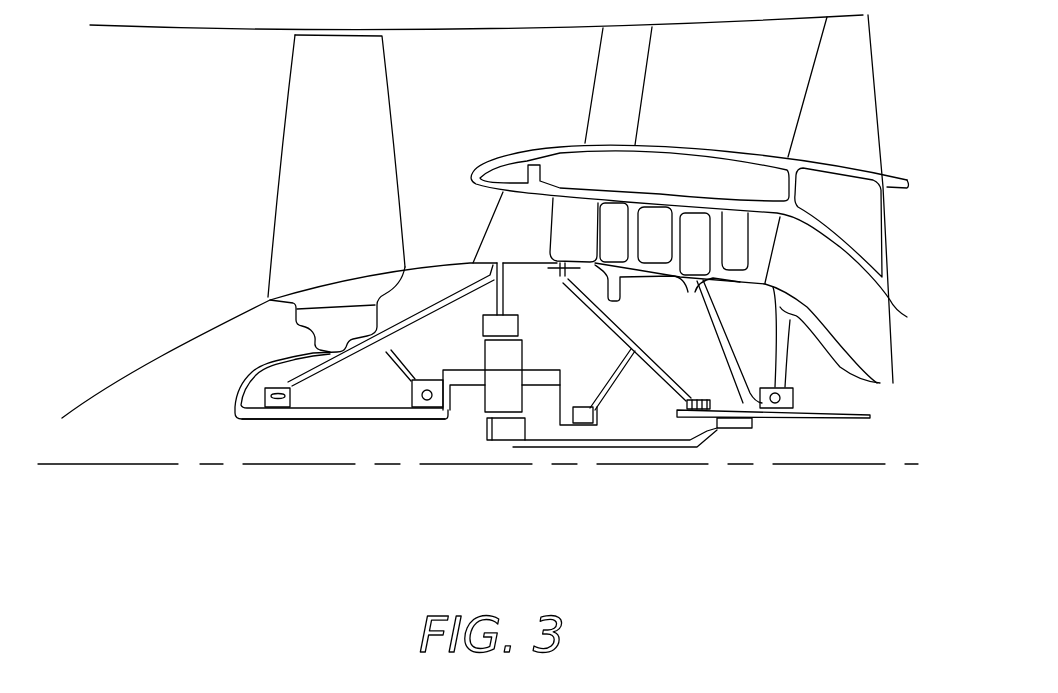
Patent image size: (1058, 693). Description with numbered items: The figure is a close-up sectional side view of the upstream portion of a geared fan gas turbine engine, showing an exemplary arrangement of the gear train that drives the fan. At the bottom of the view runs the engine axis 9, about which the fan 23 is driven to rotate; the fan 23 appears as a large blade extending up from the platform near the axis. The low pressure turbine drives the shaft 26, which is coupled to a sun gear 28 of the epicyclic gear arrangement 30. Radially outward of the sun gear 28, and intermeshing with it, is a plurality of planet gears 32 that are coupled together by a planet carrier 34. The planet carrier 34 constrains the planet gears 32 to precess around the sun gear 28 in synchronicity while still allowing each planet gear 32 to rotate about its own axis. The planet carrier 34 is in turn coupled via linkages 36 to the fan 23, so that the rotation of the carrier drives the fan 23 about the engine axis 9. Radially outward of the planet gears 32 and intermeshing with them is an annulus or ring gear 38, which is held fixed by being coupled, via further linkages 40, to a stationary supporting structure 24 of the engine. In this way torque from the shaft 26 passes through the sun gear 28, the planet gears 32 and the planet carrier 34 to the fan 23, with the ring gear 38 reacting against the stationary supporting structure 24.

The engine axis 9 is at (157, 466).
The fan 23 is at (310, 167).
The stationary supporting structure 24 is at (507, 222).
The shaft 26 is at (633, 443).
The sun gear 28 is at (505, 432).
The epicyclic gear arrangement 30 is at (470, 413).
The planet gears 32 is at (492, 400).
The planet carrier 34 is at (557, 400).
The linkages 36 is at (456, 405).
The ring gear 38 is at (508, 326).
The linkages 40 is at (504, 296).